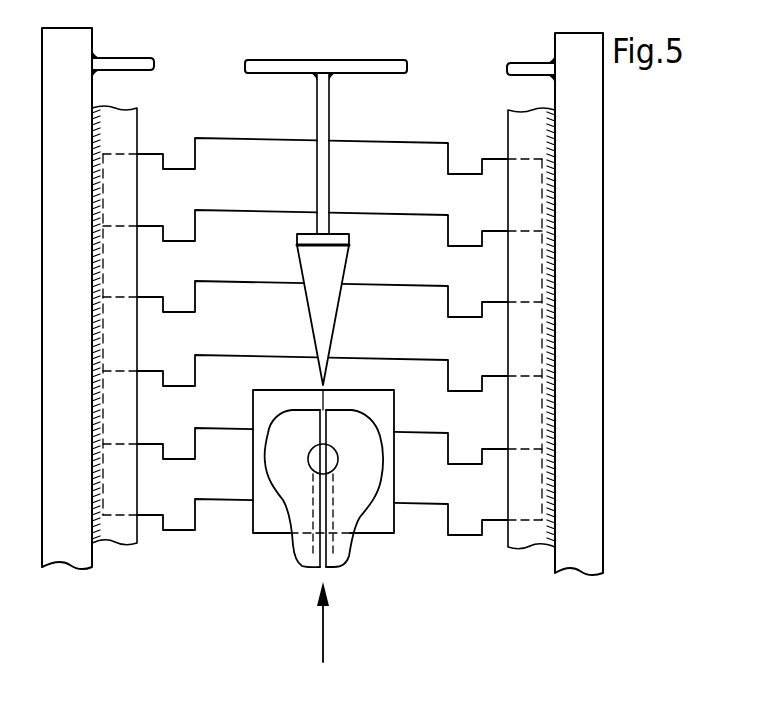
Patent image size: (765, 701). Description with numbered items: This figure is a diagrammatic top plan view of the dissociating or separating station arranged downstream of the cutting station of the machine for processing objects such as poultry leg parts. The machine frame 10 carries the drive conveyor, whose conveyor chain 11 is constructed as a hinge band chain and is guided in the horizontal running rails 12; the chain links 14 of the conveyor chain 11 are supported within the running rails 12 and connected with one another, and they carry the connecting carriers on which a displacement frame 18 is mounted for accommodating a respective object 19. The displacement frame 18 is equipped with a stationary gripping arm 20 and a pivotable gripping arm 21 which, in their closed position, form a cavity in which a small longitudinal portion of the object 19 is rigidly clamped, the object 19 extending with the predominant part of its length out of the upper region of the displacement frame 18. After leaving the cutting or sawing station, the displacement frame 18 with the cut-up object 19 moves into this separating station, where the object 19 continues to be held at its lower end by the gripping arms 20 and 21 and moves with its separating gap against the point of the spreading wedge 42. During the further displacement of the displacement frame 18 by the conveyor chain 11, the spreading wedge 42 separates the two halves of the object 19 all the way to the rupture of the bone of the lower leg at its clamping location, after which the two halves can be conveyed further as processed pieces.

The machine frame 10 is at (77, 42).
The conveyor chain 11 is at (322, 283).
The running rails 12 is at (120, 128).
The chain links 14 is at (253, 187).
The displacement frame 18 is at (397, 487).
The object 19 is at (357, 510).
The stationary gripping arm 20 is at (383, 407).
The pivotable gripping arm 21 is at (266, 518).
The spreading wedge 42 is at (327, 314).